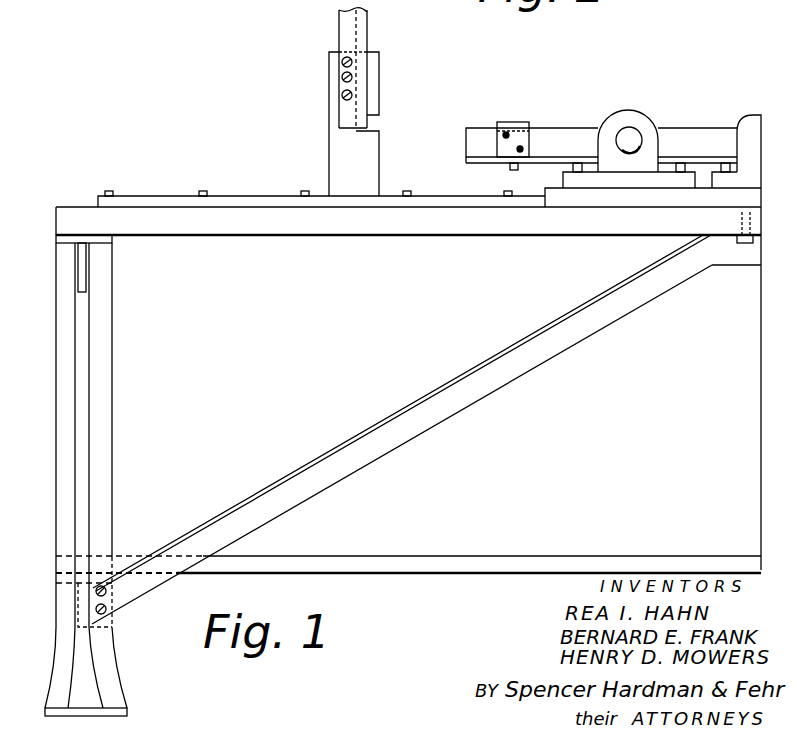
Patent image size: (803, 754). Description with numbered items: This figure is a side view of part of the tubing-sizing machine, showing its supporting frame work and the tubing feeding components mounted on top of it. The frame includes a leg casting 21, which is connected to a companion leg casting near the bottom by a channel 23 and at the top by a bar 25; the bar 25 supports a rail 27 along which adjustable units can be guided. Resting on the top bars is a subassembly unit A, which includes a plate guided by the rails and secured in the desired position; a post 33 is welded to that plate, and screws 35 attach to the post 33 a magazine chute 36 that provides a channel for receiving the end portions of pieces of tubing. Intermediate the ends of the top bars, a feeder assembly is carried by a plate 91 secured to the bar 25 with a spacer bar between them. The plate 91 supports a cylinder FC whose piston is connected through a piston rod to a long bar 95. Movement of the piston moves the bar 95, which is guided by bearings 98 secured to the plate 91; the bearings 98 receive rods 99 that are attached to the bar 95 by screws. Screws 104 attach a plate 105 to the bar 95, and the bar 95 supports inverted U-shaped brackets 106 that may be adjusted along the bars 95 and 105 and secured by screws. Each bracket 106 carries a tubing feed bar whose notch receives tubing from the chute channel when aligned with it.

The leg casting 21 is at (112, 328).
The channel 23 is at (528, 553).
The bar 25 is at (442, 222).
The rail 27 is at (283, 171).
The post 33 is at (379, 148).
The screws 35 is at (353, 66).
The magazine chute 36 is at (368, 35).
The plate 91 is at (601, 197).
The long bar 95 is at (467, 134).
The bearings 98 is at (633, 112).
The rods 99 is at (641, 132).
The screws 104 is at (513, 167).
The plate 105 is at (486, 164).
The inverted U-shaped bracket 106 is at (528, 122).
The subassembly unit A is at (346, 102).
The cylinder FC is at (752, 122).